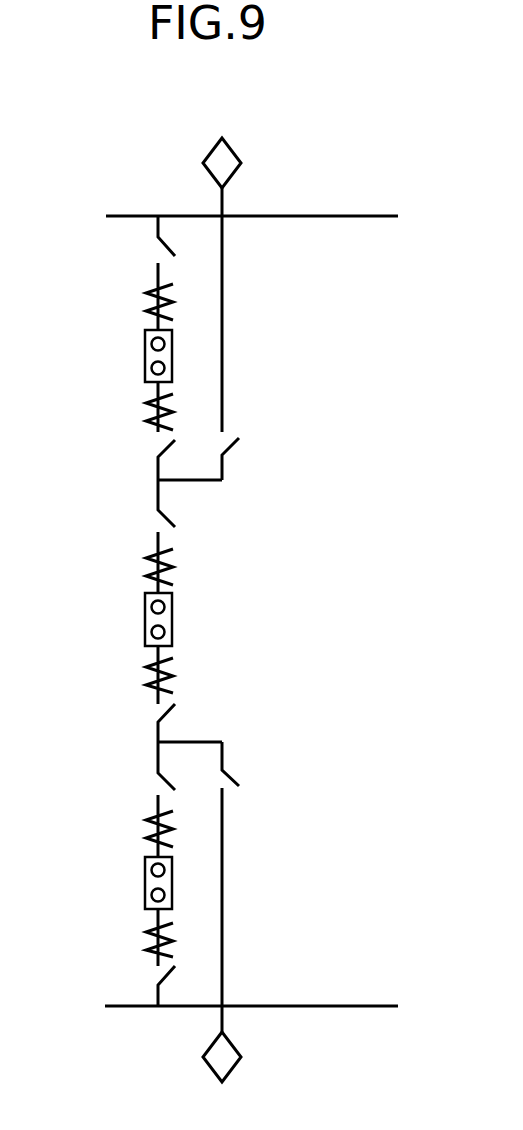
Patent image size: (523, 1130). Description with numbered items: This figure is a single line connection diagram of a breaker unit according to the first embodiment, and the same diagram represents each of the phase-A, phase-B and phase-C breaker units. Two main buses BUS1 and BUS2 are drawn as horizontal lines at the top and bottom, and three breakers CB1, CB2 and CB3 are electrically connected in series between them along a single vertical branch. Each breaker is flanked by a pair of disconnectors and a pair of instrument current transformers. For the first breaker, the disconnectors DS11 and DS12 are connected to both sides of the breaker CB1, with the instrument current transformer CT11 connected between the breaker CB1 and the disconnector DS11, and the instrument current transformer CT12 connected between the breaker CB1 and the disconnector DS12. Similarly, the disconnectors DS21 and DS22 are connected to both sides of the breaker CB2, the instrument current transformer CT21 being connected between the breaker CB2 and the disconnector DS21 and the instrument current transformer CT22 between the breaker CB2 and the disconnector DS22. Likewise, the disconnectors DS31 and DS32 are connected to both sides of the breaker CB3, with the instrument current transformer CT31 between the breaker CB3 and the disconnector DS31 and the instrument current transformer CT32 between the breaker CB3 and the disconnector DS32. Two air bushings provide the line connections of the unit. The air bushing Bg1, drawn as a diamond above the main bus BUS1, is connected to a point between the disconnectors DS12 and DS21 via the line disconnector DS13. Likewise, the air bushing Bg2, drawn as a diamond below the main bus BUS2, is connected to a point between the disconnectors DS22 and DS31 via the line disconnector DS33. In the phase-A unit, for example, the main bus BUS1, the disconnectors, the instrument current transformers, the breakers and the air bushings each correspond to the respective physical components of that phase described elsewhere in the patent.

The main bus BUS1 is at (330, 214).
The main bus BUS2 is at (338, 1004).
The air bushing Bg1 is at (212, 148).
The air bushing Bg2 is at (242, 1058).
The disconnector DS11 is at (160, 251).
The instrument current transformer CT11 is at (150, 313).
The breaker CB1 is at (145, 371).
The instrument current transformer CT12 is at (150, 424).
The disconnector DS12 is at (160, 450).
The line disconnector DS13 is at (240, 441).
The disconnector DS21 is at (162, 517).
The instrument current transformer CT21 is at (150, 578).
The breaker CB2 is at (145, 623).
The instrument current transformer CT22 is at (150, 688).
The disconnector DS22 is at (160, 715).
The disconnector DS31 is at (162, 780).
The line disconnector DS33 is at (240, 777).
The instrument current transformer CT31 is at (150, 841).
The breaker CB3 is at (145, 895).
The instrument current transformer CT32 is at (150, 950).
The disconnector DS32 is at (160, 975).